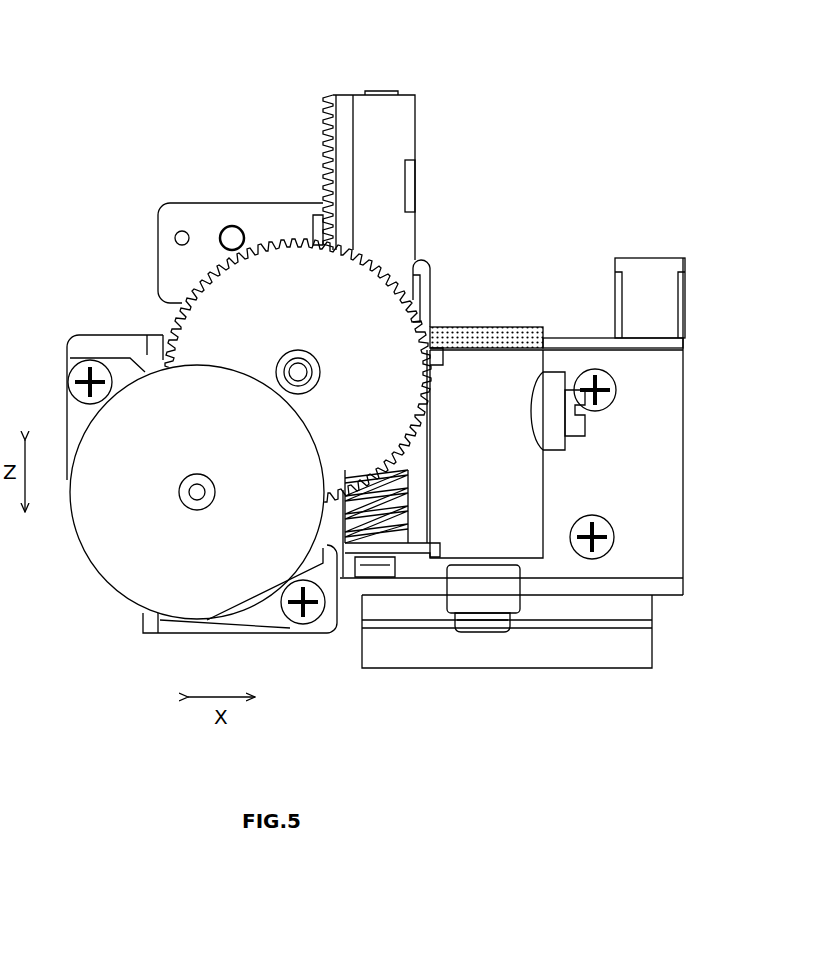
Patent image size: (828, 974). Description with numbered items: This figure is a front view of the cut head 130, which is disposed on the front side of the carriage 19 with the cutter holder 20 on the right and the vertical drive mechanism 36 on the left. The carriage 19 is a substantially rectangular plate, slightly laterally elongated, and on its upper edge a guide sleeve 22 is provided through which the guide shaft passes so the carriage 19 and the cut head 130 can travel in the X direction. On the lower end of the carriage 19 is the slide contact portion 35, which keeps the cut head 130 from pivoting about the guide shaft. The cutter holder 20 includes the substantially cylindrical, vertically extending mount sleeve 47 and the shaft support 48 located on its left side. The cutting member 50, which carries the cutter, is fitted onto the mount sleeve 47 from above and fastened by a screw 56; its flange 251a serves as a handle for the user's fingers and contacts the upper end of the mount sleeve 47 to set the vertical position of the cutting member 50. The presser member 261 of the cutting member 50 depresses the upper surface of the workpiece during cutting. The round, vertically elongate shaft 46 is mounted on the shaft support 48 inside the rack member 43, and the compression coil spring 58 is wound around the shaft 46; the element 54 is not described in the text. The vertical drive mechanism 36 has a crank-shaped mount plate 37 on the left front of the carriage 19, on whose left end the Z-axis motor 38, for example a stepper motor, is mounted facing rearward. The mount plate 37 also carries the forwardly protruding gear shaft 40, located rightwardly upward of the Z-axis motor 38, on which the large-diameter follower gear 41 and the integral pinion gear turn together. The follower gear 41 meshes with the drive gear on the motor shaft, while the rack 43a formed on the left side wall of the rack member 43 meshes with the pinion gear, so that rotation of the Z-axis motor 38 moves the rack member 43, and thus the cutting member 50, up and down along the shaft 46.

The cut head 130 is at (140, 148).
The vertical drive mechanism 36 is at (283, 198).
The rack member 43 is at (388, 108).
The rack 43a is at (322, 138).
The shaft support 48 is at (433, 277).
The cutting member 50 is at (503, 327).
The flange 251a is at (555, 338).
The guide sleeve 22 is at (652, 258).
The carriage 19 is at (665, 475).
The mount sleeve 47 is at (520, 472).
The screw 56 is at (582, 428).
The cutter holder 20 is at (565, 515).
The compression coil spring 58 is at (410, 468).
The shaft 46 is at (375, 535).
The spring seat 54 is at (398, 545).
The presser member 261 is at (515, 600).
The slide contact portion 35 is at (655, 642).
The mount plate 37 is at (95, 335).
The follower gear 41 is at (200, 278).
The gear shaft 40 is at (325, 368).
The Z-axis motor 38 is at (110, 573).